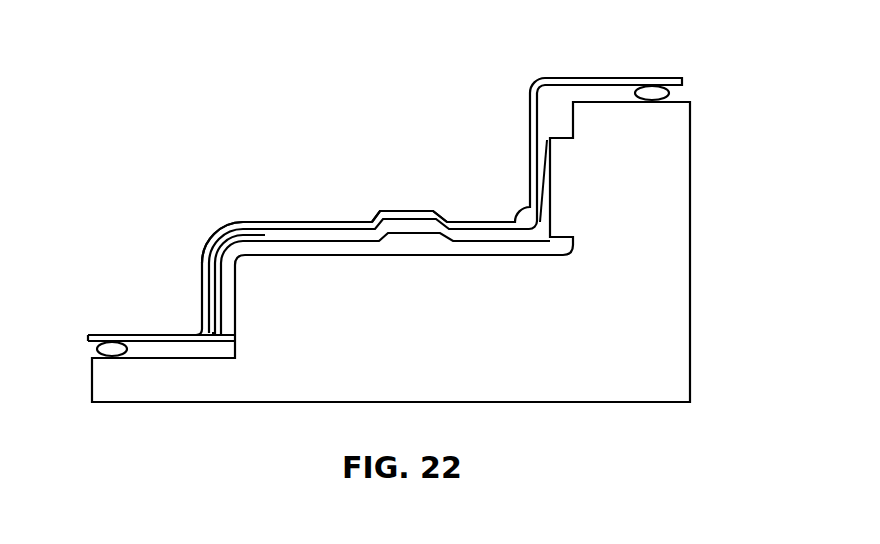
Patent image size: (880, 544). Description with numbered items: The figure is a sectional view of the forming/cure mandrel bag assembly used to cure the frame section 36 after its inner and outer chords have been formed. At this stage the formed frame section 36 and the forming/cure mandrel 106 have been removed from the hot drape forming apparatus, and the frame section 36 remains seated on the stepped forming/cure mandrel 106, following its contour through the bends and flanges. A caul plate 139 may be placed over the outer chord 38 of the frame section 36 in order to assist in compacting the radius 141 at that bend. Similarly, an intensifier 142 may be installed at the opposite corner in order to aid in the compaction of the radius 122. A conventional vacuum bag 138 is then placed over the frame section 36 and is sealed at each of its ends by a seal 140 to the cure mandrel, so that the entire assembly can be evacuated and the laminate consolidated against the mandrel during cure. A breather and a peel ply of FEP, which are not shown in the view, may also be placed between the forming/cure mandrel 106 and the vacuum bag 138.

The frame section 36 is at (313, 252).
The outer chord 38 is at (228, 280).
The forming/cure mandrel 106 is at (298, 340).
The radius 122 is at (566, 237).
The vacuum bag 138 is at (402, 211).
The caul plate 139 is at (203, 255).
The seal 140 is at (113, 348).
The radius 141 is at (234, 227).
The intensifier 142 is at (515, 220).